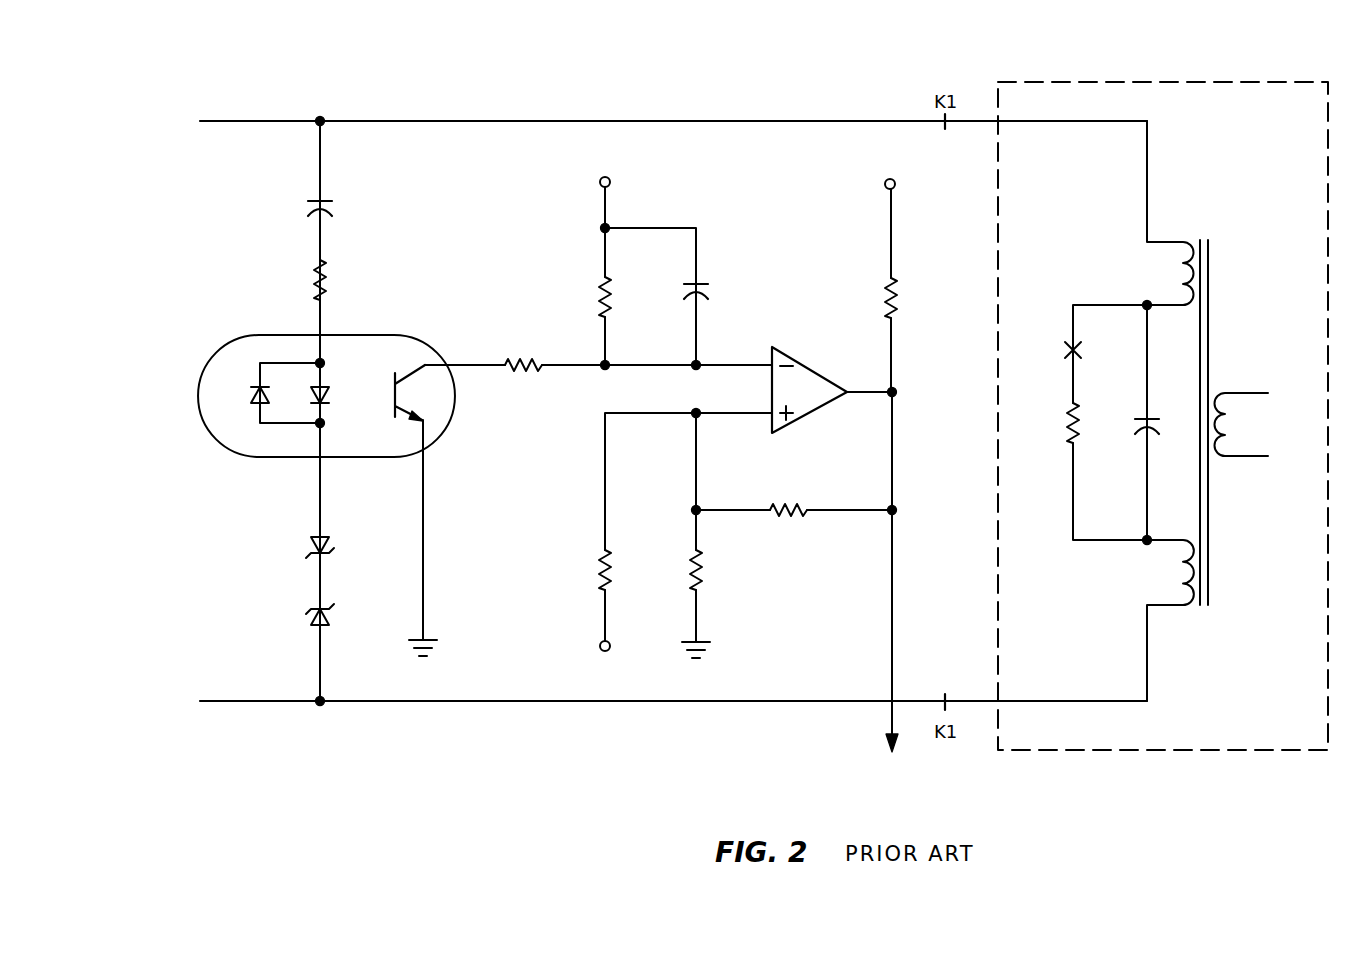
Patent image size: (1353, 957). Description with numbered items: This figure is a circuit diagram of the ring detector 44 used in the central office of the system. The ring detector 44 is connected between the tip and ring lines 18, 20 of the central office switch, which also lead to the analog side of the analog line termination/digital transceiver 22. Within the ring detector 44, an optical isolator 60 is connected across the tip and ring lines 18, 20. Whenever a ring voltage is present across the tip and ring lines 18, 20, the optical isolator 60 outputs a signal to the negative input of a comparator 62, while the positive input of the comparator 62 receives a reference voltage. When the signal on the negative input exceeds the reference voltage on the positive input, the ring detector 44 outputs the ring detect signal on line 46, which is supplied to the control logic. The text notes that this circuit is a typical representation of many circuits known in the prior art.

The tip line 18 is at (257, 121).
The ring line 20 is at (230, 702).
The analog line termination/digital transceiver 22 is at (1176, 82).
The ring detector 44 is at (534, 622).
The ring detect line 46 is at (890, 723).
The optical isolator 60 is at (405, 333).
The comparator 62 is at (805, 362).